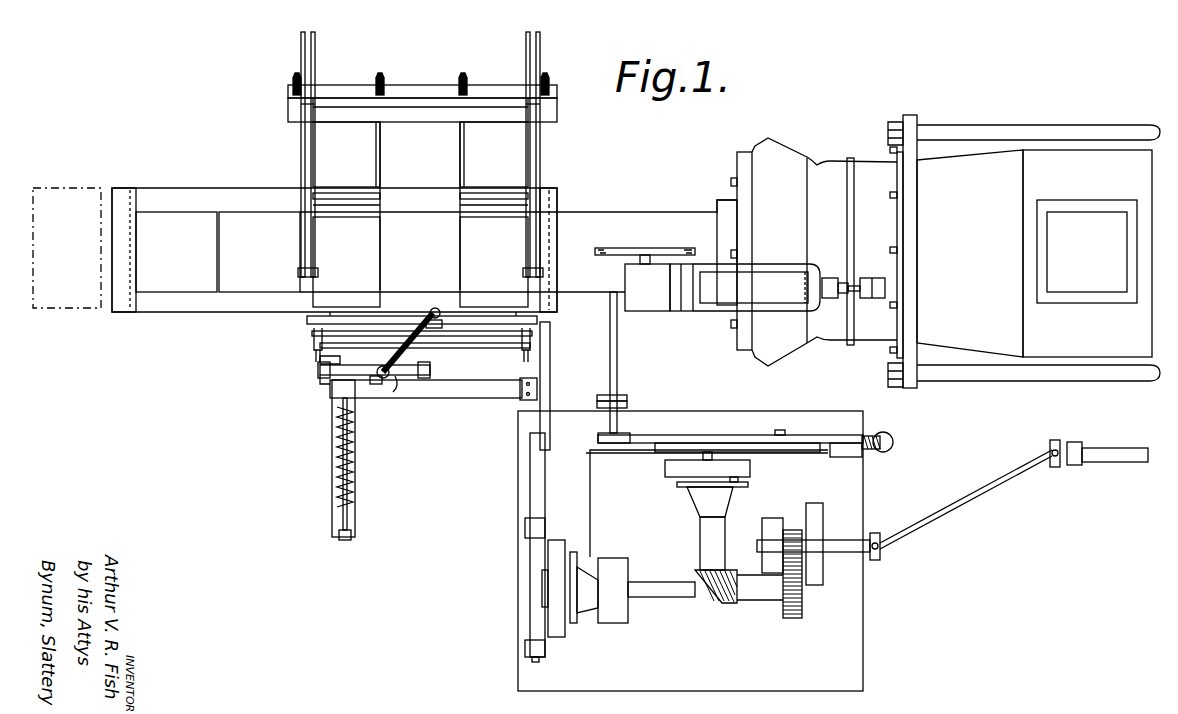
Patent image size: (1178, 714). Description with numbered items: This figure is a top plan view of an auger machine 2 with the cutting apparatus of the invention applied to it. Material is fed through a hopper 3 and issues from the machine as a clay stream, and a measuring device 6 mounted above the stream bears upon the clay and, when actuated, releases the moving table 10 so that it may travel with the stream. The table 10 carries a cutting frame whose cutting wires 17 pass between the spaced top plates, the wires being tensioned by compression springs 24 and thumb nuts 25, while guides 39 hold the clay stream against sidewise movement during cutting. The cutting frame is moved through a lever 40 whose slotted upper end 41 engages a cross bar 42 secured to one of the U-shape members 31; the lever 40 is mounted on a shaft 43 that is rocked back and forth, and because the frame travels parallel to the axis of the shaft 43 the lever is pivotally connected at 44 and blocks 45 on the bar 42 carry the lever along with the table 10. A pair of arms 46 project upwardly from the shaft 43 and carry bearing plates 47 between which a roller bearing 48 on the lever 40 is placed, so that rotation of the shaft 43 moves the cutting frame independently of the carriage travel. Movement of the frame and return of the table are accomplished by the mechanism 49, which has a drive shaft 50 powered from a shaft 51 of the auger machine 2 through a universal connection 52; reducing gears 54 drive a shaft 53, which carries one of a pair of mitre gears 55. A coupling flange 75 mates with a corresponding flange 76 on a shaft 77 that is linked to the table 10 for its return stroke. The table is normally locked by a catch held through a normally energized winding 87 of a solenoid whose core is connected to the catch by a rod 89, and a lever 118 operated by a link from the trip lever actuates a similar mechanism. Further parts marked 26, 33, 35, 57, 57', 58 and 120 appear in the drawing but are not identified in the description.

The auger machine 2 is at (970, 253).
The hopper 3 is at (1087, 253).
The measuring device 6 is at (755, 287).
The moving table 10 is at (245, 181).
The cutting wires 17 is at (458, 159).
The compression springs 24 is at (478, 82).
The thumb nuts 25 is at (465, 78).
The hooks 26 is at (312, 340).
The U-shape members 31 is at (306, 319).
The vertical rods 33 is at (300, 57).
The upper block 35 is at (355, 127).
The guides 39 is at (357, 204).
The lever 40 is at (420, 341).
The slotted upper end 41 is at (433, 307).
The cross bar 42 is at (494, 332).
The shaft 43 is at (490, 388).
The pivotal connection 44 is at (380, 385).
The blocks 45 is at (426, 318).
The arms 46 is at (318, 378).
The bearing plates 47 is at (400, 380).
The roller bearing 48 is at (320, 360).
The mechanism 49 is at (690, 506).
The drive shaft 50 is at (870, 540).
The shaft 51 is at (1125, 456).
The universal connection 52 is at (978, 492).
The shaft 53 is at (674, 590).
The reducing gears 54 is at (796, 618).
The mitre gears 55 is at (725, 604).
The disk 57 is at (732, 523).
The cone pulley 57' is at (575, 600).
The pulley 58 is at (750, 468).
The coupling flange 75 is at (627, 404).
The flange 76 is at (627, 396).
The shaft 77 is at (617, 353).
The winding 87 is at (896, 441).
The rod 89 is at (890, 434).
The lever 118 is at (590, 497).
The handwheel 120 is at (658, 244).